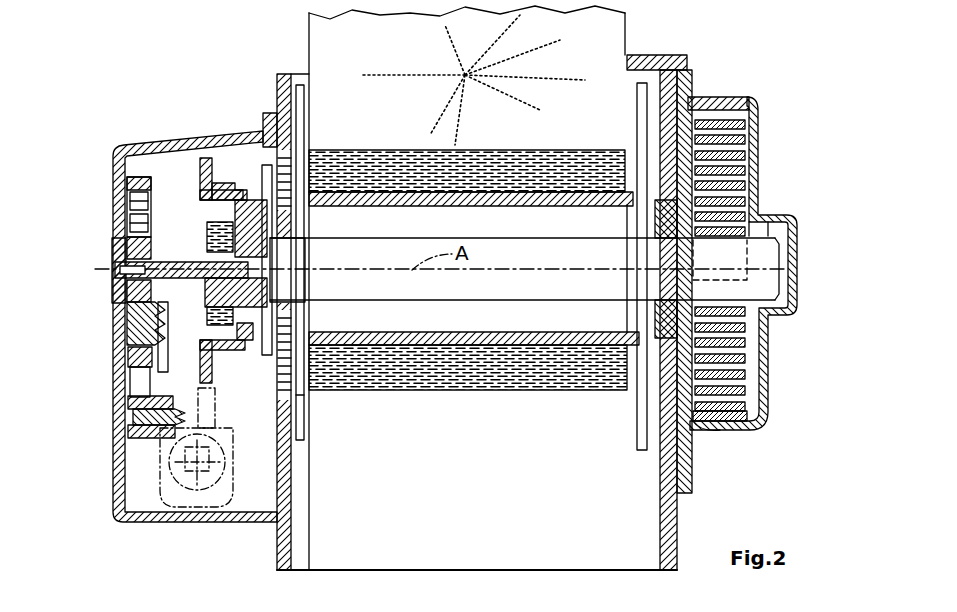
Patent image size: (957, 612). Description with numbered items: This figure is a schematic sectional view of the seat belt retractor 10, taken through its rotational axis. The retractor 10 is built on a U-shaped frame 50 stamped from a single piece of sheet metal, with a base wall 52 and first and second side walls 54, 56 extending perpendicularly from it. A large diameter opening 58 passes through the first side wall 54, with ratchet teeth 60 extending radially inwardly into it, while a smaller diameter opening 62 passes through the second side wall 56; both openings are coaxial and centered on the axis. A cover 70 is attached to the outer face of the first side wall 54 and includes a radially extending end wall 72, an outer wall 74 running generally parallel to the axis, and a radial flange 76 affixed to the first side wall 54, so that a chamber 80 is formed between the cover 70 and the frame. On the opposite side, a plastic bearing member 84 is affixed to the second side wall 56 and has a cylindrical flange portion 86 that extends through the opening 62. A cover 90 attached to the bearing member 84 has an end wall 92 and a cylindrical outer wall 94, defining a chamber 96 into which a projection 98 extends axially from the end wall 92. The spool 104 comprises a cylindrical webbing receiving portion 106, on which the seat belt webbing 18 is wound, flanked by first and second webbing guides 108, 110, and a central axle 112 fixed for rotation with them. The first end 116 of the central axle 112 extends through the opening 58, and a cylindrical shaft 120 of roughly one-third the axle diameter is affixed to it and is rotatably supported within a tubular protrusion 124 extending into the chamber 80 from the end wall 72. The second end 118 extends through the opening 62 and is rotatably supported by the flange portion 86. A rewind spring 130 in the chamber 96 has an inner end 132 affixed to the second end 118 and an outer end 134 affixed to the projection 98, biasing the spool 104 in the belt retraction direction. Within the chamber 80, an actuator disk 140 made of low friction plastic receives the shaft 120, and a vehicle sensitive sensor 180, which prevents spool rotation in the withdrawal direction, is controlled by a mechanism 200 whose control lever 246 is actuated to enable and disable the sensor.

The seat belt retractor 10 is at (178, 70).
The seat belt webbing 18 is at (600, 42).
The U-shaped frame 50 is at (462, 326).
The base wall 52 is at (490, 520).
The first side wall 54 is at (292, 545).
The second side wall 56 is at (660, 532).
The large diameter opening 58 is at (300, 400).
The ratchet teeth 60 is at (285, 368).
The smaller diameter opening 62 is at (660, 238).
The cover 70 is at (187, 282).
The end wall 72 is at (128, 437).
The outer wall 74 is at (145, 150).
The radial flange 76 is at (268, 120).
The chamber 80 is at (287, 457).
The bearing member 84 is at (690, 462).
The cylindrical flange portion 86 is at (660, 305).
The cover 90 is at (761, 248).
The end wall 92 is at (760, 165).
The cylindrical outer wall 94 is at (715, 100).
The chamber 96 is at (752, 226).
The projection 98 is at (740, 430).
The spool 104 is at (620, 400).
The webbing receiving portion 106 is at (562, 197).
The first webbing guide 108 is at (302, 120).
The second webbing guide 110 is at (640, 437).
The central axle 112 is at (547, 285).
The first end 116 is at (283, 256).
The second end 118 is at (770, 300).
The cylindrical shaft 120 is at (135, 210).
The tubular protrusion 124 is at (118, 262).
The rewind spring 130 is at (735, 150).
The inner end 132 is at (772, 232).
The outer end 134 is at (760, 418).
The actuator disk 140 is at (222, 186).
The vehicle sensitive sensor 180 is at (235, 483).
The mechanism 200 is at (127, 357).
The control lever 246 is at (150, 440).